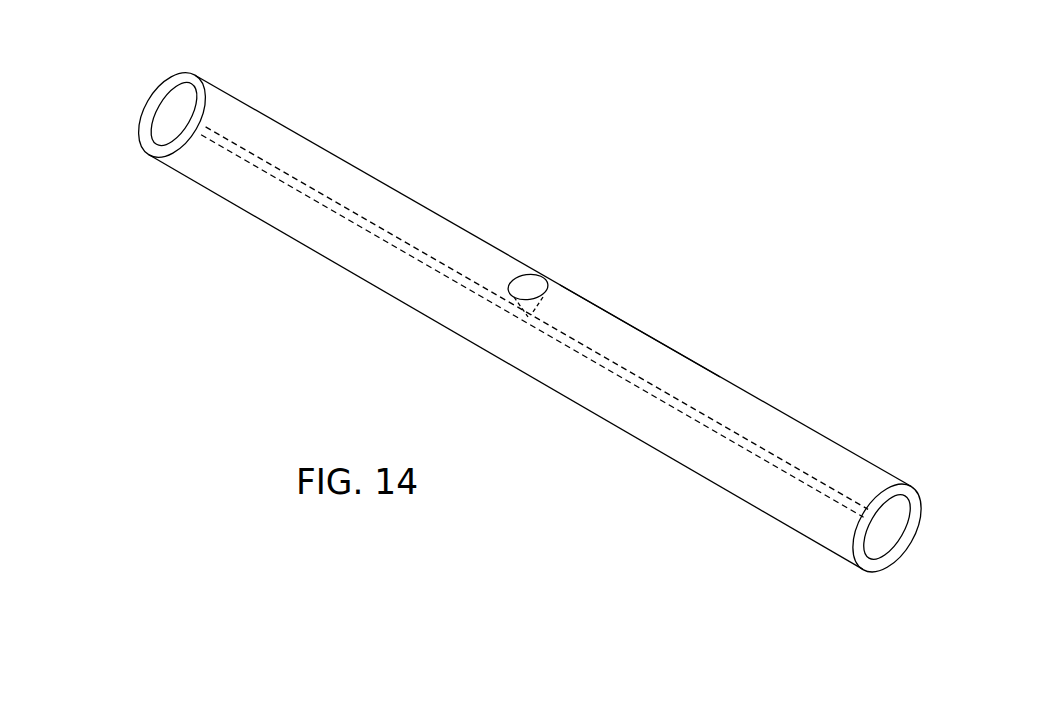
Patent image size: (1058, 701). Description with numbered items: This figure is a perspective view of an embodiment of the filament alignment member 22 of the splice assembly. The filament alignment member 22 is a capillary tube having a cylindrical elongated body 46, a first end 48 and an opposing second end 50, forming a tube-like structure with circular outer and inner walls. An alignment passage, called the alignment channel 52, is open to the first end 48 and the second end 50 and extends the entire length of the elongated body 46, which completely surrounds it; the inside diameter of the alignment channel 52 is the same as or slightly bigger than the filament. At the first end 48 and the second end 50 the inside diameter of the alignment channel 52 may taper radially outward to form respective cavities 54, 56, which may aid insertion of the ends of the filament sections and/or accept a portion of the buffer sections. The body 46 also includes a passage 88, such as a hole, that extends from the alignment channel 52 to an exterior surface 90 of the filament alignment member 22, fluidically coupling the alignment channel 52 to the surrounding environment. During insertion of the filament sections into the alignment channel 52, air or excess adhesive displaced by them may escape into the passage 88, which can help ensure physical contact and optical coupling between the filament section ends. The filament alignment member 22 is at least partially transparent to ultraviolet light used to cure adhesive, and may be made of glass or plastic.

The filament alignment member 22 is at (320, 163).
The elongated body 46 is at (657, 357).
The first end 48 is at (148, 144).
The second end 50 is at (872, 558).
The alignment channel 52 is at (422, 257).
The cavity 54 is at (177, 100).
The cavity 56 is at (890, 520).
The passage 88 is at (534, 287).
The exterior surface 90 is at (600, 327).